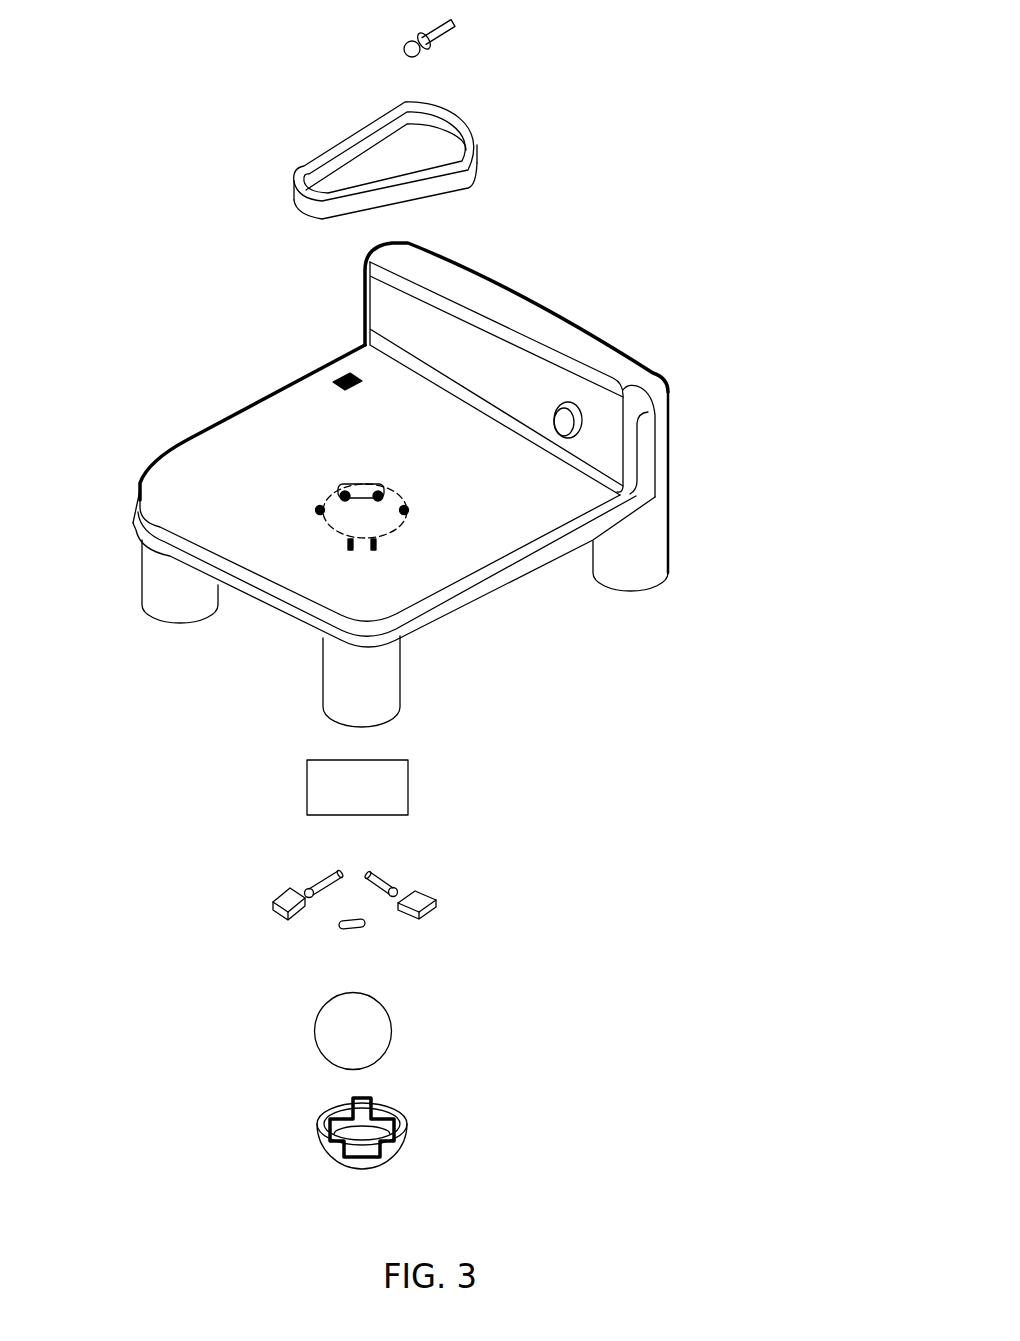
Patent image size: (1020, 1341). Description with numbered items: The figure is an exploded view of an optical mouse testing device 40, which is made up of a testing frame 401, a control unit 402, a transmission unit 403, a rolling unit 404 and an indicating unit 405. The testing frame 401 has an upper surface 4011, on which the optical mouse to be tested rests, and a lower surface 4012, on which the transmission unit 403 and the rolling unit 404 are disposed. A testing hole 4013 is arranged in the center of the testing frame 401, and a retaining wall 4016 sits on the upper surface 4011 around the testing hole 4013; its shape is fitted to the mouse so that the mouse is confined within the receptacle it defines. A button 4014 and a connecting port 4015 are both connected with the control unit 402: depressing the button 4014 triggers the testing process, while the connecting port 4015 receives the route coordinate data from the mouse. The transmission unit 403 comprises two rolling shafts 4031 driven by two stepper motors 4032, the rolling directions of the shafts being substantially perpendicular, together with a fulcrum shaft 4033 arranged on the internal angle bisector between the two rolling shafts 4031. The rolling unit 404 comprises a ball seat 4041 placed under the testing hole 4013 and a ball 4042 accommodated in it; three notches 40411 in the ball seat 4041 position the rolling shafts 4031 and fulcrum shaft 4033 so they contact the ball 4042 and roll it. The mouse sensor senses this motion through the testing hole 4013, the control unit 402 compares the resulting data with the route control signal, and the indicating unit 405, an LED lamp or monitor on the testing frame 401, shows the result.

The optical mouse testing device 40 is at (638, 103).
The testing frame 401 is at (552, 310).
The upper surface 4011 is at (200, 467).
The lower surface 4012 is at (482, 603).
The testing hole 4013 is at (358, 484).
The button 4014 is at (567, 405).
The connecting port 4015 is at (345, 372).
The retaining wall 4016 is at (428, 118).
The control unit 402 is at (395, 797).
The transmission unit 403 is at (514, 838).
The rolling shafts 4031 is at (328, 877).
The stepper motors 4032 is at (290, 895).
The fulcrum shaft 4033 is at (360, 927).
The rolling unit 404 is at (514, 1007).
The ball seat 4041 is at (395, 1148).
The notches 40411 is at (333, 1112).
The ball 4042 is at (378, 1032).
The indicating unit 405 is at (415, 43).